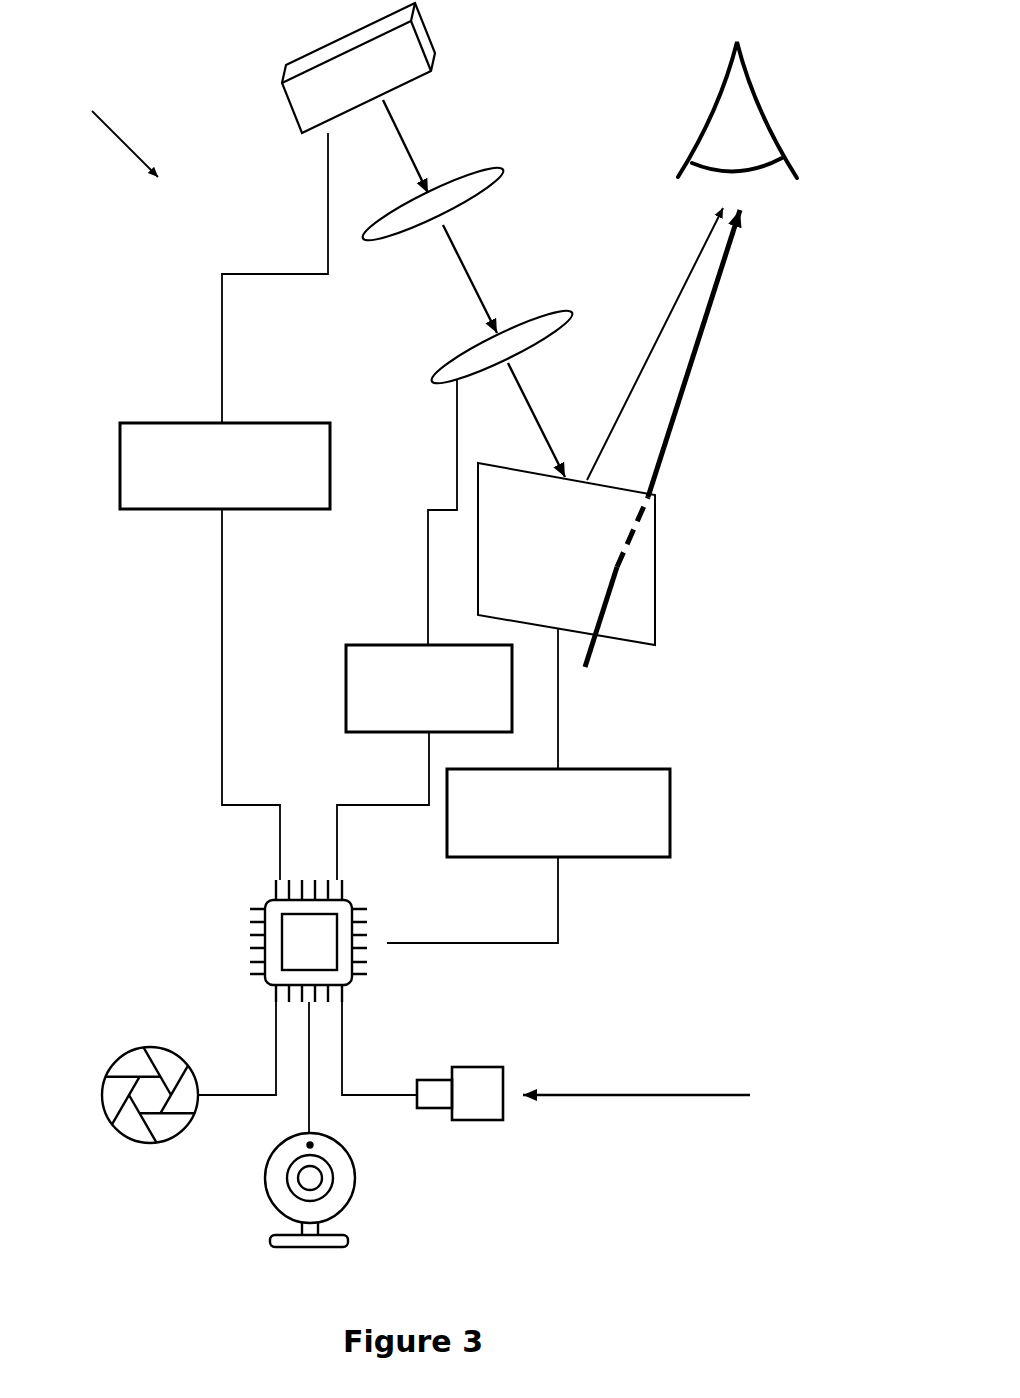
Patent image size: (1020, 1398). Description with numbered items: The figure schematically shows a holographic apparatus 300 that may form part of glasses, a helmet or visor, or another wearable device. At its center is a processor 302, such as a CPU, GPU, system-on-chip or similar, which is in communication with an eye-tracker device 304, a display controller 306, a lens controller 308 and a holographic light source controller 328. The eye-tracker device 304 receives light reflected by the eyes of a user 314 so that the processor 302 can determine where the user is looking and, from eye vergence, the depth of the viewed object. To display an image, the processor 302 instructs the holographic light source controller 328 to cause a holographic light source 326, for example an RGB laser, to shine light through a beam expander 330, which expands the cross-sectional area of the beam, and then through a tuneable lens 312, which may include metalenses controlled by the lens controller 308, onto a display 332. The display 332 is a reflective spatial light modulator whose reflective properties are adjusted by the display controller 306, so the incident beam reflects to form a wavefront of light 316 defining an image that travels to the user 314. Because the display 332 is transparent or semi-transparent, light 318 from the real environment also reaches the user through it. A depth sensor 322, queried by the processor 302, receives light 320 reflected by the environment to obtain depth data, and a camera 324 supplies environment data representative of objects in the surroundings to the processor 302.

The apparatus 300 is at (104, 130).
The processor 302 is at (265, 900).
The eye-tracker device 304 is at (348, 1245).
The display controller 306 is at (670, 857).
The lens controller 308 is at (346, 645).
The tuneable lens 312 is at (567, 310).
The user 314 is at (768, 127).
The light from the display 316 is at (695, 265).
The light from the real environment 318 is at (688, 393).
The light reflected by the environment 320 is at (657, 1092).
The depth sensor 322 is at (502, 1122).
The camera 324 is at (113, 1063).
The holographic light source 326 is at (286, 65).
The holographic light source controller 328 is at (120, 421).
The beam expander 330 is at (500, 170).
The display 332 is at (655, 645).